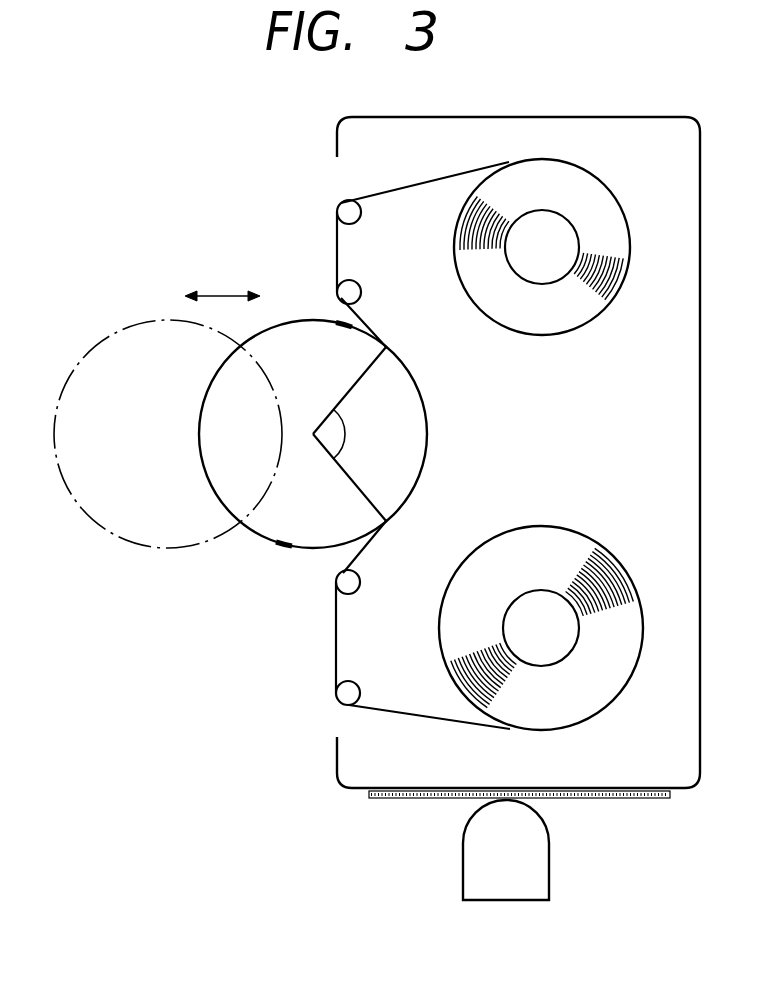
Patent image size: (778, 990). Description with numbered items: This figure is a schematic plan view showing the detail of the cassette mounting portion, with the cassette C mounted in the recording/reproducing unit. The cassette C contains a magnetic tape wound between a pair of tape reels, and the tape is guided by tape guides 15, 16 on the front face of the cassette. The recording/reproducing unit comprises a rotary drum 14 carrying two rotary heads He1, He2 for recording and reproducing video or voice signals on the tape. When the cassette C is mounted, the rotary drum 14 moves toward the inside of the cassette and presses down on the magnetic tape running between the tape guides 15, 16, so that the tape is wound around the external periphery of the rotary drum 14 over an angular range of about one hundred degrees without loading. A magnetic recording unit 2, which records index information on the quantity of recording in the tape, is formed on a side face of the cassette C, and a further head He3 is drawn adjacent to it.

The cassette C is at (614, 110).
The tape guide 15 is at (353, 287).
The tape guide 16 is at (345, 584).
The rotary drum 14 is at (257, 531).
The rotary head He1 is at (282, 544).
The rotary head He2 is at (343, 328).
The stationary erase head He3 is at (468, 866).
The magnetic recording unit 2 is at (640, 804).